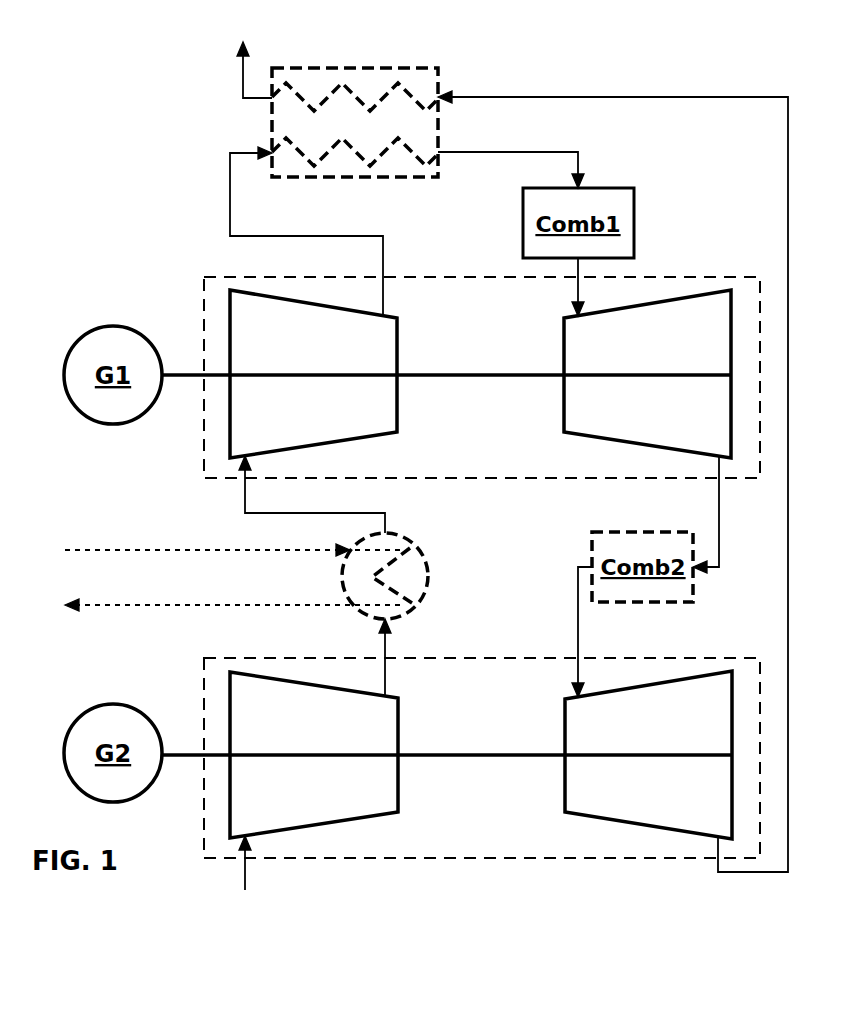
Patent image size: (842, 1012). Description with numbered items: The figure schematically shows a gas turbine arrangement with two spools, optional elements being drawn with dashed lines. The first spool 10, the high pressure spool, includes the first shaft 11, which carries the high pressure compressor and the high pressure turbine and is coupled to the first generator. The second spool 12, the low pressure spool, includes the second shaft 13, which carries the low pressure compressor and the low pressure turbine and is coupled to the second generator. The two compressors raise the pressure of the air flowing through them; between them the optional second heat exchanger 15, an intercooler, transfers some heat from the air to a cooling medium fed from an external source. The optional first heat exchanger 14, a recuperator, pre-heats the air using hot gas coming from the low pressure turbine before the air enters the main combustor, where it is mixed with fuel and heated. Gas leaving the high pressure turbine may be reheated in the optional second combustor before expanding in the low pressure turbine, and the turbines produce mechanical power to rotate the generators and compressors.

The first spool 10 is at (482, 377).
The first shaft 11 is at (466, 370).
The second spool 12 is at (482, 758).
The second shaft 13 is at (463, 750).
The first heat exchanger 14 is at (438, 68).
The second heat exchanger 15 is at (430, 578).